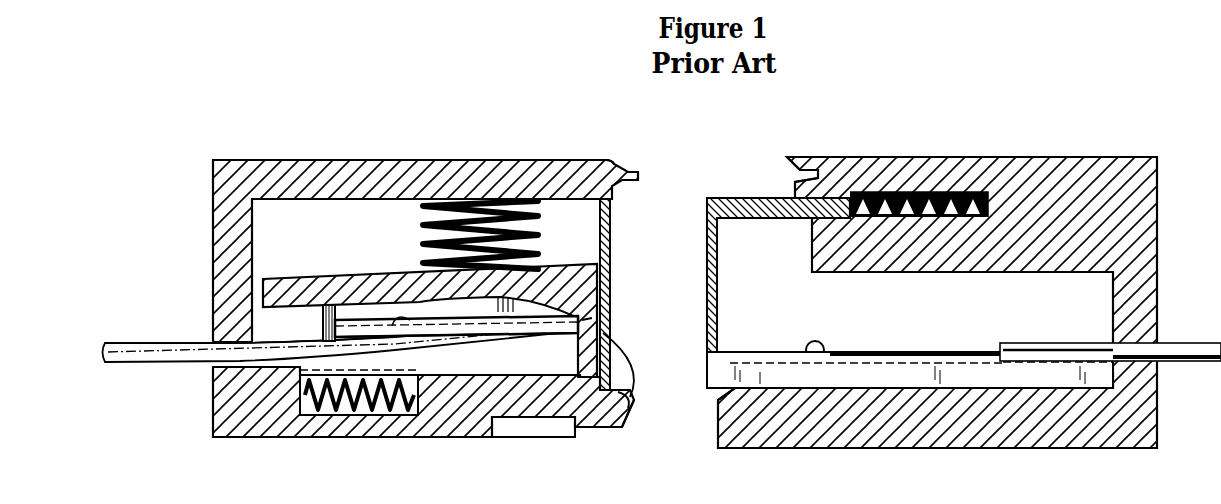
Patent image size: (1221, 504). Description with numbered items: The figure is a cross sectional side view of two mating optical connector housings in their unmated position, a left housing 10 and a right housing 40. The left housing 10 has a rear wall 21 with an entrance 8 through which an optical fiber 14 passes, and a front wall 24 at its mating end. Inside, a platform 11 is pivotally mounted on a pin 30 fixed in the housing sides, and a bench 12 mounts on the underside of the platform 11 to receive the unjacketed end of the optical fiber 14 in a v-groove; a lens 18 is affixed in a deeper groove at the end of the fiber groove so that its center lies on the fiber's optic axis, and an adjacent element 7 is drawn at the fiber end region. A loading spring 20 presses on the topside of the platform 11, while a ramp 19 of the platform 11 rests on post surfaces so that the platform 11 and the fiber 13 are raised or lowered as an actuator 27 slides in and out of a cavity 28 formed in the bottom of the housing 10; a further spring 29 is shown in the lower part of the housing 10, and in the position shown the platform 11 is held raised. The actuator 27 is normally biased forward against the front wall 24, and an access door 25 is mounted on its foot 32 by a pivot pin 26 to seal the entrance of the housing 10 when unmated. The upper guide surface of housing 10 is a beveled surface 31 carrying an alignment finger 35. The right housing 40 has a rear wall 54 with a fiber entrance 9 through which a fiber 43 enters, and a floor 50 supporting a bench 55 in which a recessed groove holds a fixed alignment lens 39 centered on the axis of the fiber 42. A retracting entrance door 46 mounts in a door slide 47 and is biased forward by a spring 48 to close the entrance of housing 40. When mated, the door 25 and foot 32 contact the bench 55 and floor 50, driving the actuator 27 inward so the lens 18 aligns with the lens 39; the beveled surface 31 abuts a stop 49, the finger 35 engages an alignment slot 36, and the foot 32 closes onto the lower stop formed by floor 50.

The left housing 10 is at (400, 160).
The beveled surface 31 is at (611, 160).
The alignment finger 35 is at (640, 179).
The rear wall 21 is at (255, 212).
The loading spring 20 is at (535, 228).
The front wall 24 is at (612, 226).
The pin 30 is at (295, 278).
The platform 11 is at (357, 278).
The entrance 8 is at (213, 336).
The optical fiber 14 is at (180, 344).
The bench 12 is at (323, 330).
The alignment lens 39 is at (818, 316).
The ferrule 7 is at (478, 324).
The lens 18 is at (600, 318).
The ramp 19 is at (520, 330).
The fiber 13 is at (545, 335).
The access door 25 is at (620, 347).
The pivot pin 26 is at (630, 395).
The lower spring 29 is at (345, 420).
The cavity 28 is at (400, 437).
The actuator 27 is at (545, 430).
The foot 32 is at (625, 410).
The spring 48 is at (880, 200).
The door slide 47 is at (950, 205).
The right housing 40 is at (1006, 158).
The retracting entrance door 46 is at (712, 198).
The stop 49 is at (788, 162).
The alignment slot 36 is at (808, 181).
The rear wall 54 is at (1113, 283).
The fiber 42 is at (905, 350).
The fiber 43 is at (1015, 340).
The fiber entrance 9 is at (1158, 336).
The bench 55 is at (707, 370).
The floor 50 is at (735, 400).